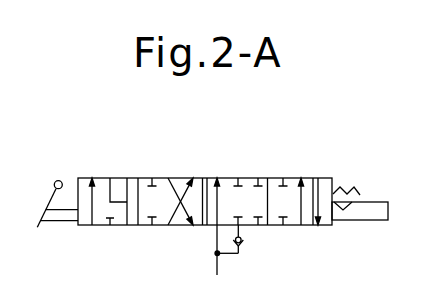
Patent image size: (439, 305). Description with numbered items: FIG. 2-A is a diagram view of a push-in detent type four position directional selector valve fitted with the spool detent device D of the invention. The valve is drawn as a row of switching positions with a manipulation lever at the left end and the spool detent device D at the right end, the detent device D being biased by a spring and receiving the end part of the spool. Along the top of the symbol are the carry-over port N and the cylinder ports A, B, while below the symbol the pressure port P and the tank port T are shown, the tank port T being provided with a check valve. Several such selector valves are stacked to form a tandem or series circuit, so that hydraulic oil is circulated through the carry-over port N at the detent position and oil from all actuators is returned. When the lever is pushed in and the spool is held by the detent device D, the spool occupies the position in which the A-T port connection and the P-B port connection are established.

The carry-over port N is at (218, 204).
The cylinder port A is at (237, 190).
The cylinder port B is at (258, 190).
The spool detent device D is at (379, 192).
The P port P is at (230, 263).
The T port T is at (247, 239).